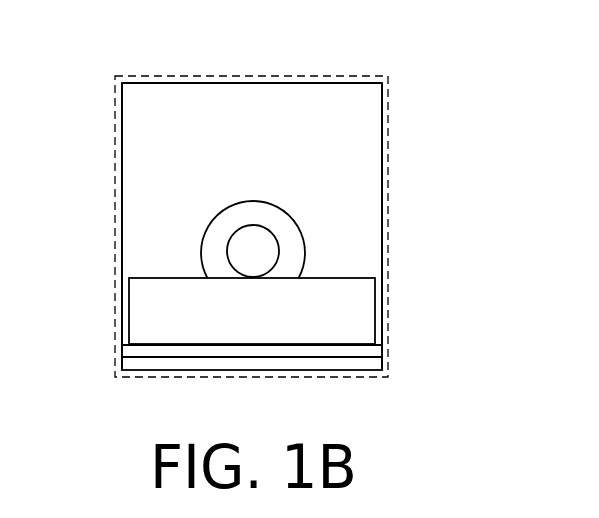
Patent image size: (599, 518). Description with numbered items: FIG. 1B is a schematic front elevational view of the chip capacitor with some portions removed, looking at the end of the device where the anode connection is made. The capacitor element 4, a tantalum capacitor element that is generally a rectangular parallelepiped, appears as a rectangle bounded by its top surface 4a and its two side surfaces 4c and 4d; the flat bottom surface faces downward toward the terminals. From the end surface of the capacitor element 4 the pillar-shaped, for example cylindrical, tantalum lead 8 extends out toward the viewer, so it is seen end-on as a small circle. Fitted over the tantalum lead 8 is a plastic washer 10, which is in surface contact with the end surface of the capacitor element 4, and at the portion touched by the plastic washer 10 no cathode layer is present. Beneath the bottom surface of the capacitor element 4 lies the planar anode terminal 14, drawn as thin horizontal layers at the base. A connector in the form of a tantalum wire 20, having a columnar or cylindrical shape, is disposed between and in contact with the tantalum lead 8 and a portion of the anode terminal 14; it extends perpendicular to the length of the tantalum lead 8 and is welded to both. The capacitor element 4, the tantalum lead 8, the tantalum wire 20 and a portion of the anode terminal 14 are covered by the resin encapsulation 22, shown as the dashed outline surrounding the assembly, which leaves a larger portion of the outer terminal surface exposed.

The tantalum capacitor element 4 is at (358, 117).
The top surface 4a is at (333, 83).
The side surface 4c is at (122, 210).
The side surface 4d is at (387, 264).
The tantalum lead 8 is at (250, 251).
The plastic washer 10 is at (267, 213).
The anode terminal 14 is at (372, 357).
The tantalum wire 20 is at (357, 312).
The encapsulation 22 is at (129, 76).